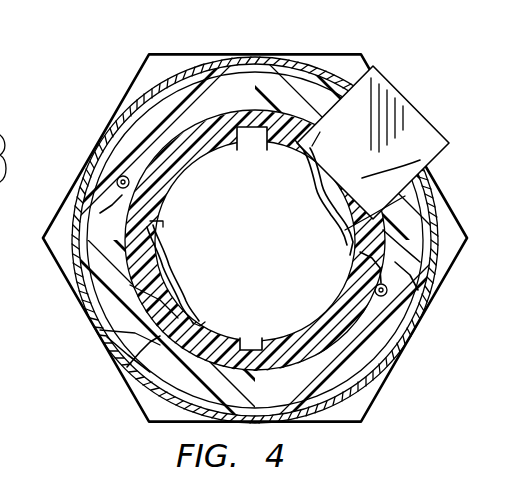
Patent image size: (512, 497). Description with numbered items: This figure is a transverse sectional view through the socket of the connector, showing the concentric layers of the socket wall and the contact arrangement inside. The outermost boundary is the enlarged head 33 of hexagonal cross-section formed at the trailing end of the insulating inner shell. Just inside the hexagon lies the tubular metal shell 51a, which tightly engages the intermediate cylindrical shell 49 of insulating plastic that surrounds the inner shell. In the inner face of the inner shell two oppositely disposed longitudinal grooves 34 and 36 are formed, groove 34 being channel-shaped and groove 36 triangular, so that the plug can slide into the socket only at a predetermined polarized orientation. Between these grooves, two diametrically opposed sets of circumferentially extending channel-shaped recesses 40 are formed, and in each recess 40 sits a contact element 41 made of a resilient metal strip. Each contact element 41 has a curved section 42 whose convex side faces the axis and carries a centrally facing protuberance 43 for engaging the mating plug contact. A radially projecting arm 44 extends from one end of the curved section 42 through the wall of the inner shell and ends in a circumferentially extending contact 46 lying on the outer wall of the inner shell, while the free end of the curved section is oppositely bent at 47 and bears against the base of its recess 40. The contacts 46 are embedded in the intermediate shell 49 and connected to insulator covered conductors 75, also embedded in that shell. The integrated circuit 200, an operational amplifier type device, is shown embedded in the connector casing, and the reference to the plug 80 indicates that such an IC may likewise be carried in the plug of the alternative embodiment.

The enlarged head 33 is at (354, 56).
The groove 34 is at (258, 142).
The groove 36 is at (251, 327).
The channel-shaped recess 40 is at (399, 234).
The contact element 41 is at (184, 292).
The curved section 42 is at (167, 243).
The protuberance 43 is at (373, 221).
The radially projecting arm 44 is at (351, 258).
The contact 46 is at (415, 266).
The oppositely bent free end 47 is at (323, 165).
The intermediate cylindrical shell 49 is at (227, 82).
The tubular metal shell 51a is at (312, 60).
The insulator covered conductor 75 is at (117, 179).
The plug 80 is at (374, 415).
The integrated circuit 200 is at (418, 101).